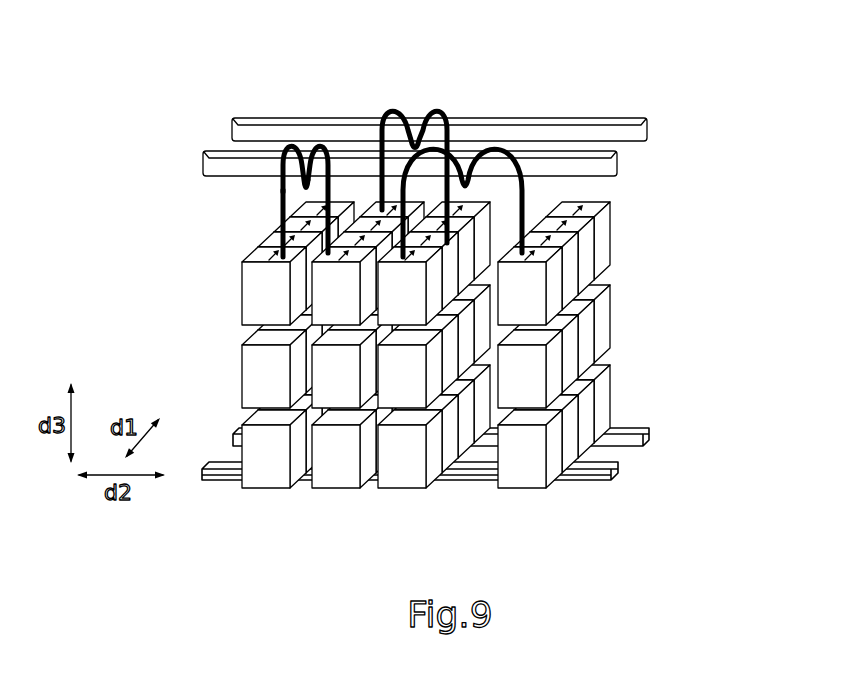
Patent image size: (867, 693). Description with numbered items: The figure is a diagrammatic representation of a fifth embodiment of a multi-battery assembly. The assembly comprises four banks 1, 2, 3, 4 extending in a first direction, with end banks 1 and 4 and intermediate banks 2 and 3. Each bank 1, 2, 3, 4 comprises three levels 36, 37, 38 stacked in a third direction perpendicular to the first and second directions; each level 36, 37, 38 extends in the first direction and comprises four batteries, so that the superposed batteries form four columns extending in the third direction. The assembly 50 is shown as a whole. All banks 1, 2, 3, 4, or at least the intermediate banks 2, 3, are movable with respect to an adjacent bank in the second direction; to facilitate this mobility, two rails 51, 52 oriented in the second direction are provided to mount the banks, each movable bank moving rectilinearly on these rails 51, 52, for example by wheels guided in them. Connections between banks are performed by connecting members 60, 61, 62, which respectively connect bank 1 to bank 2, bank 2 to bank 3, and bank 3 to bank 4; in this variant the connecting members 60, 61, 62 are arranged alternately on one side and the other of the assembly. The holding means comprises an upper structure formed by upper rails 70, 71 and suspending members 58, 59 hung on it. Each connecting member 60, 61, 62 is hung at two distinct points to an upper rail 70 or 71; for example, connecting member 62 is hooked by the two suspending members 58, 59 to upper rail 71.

The end bank 1 is at (519, 514).
The intermediate bank 2 is at (401, 515).
The intermediate bank 3 is at (332, 515).
The end bank 4 is at (262, 515).
The level 36 is at (653, 387).
The level 37 is at (653, 307).
The level 38 is at (653, 229).
The element array 50 is at (416, 398).
The rail 51 is at (606, 501).
The rail 52 is at (640, 434).
The suspending member 58 is at (325, 143).
The suspending member 59 is at (292, 143).
The connecting member 60 is at (524, 190).
The connecting member 61 is at (378, 163).
The connecting member 62 is at (280, 188).
The upper rail 70 is at (617, 118).
The upper rail 71 is at (571, 152).